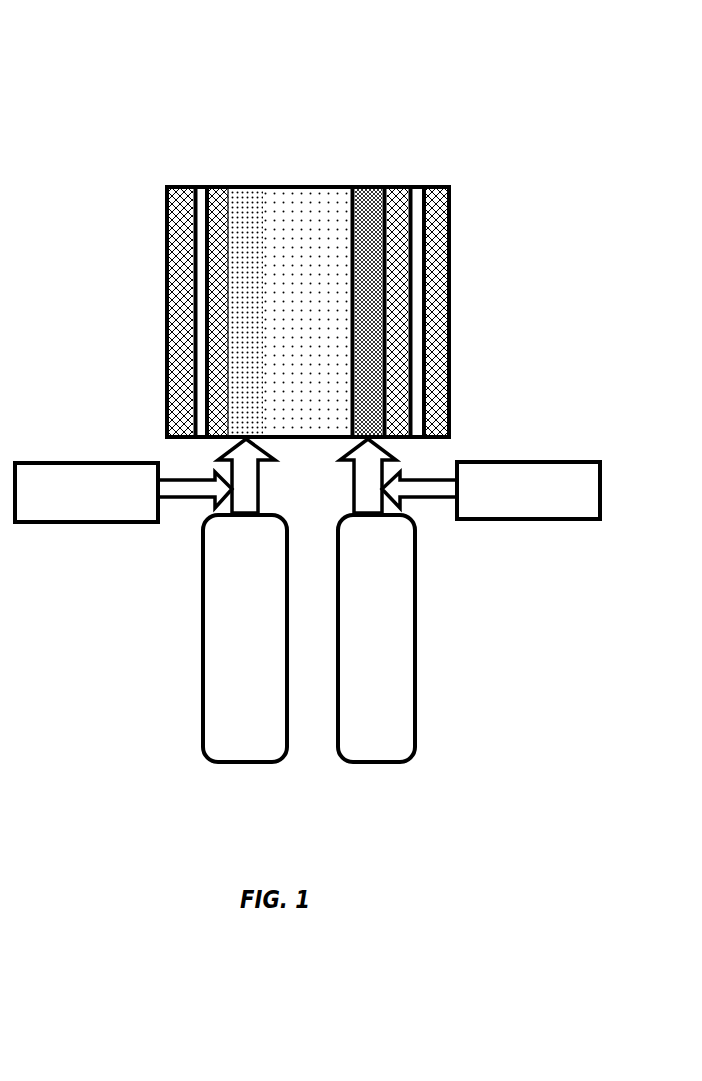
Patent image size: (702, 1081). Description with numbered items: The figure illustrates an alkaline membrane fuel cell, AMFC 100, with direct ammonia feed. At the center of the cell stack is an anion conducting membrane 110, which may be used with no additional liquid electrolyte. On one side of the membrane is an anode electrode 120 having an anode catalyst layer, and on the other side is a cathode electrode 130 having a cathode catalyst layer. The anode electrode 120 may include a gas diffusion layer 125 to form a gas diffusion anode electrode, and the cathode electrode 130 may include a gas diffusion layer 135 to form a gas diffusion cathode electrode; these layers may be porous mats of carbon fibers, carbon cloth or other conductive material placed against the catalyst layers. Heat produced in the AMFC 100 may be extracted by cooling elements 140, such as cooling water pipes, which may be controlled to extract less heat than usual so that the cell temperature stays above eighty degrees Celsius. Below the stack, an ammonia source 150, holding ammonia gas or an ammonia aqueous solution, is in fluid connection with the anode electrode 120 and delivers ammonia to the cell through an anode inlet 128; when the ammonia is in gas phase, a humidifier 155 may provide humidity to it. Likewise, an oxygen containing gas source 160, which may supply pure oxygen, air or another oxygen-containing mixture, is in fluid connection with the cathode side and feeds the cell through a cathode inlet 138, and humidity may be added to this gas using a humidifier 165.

The alkaline membrane fuel cell (AMFC) 100 is at (111, 89).
The anion conducting membrane 110 is at (303, 270).
The anode electrode 120 is at (368, 262).
The gas diffusion layer 125 is at (437, 330).
The anode inlet 128 is at (355, 438).
The cathode electrode 130 is at (250, 347).
The gas diffusion layer 135 is at (175, 403).
The cathode inlet 138 is at (262, 438).
The cooling elements 140 is at (205, 194).
The ammonia source 150 is at (415, 660).
The humidifier 155 is at (513, 462).
The oxygen containing gas source 160 is at (203, 663).
The humidifier 165 is at (95, 463).